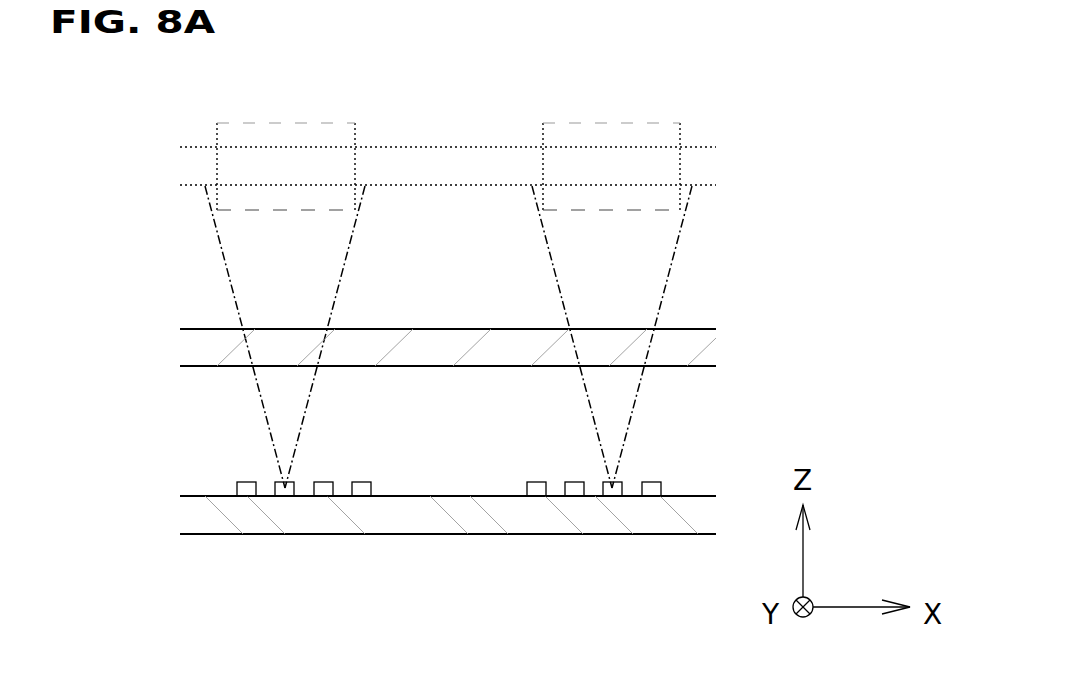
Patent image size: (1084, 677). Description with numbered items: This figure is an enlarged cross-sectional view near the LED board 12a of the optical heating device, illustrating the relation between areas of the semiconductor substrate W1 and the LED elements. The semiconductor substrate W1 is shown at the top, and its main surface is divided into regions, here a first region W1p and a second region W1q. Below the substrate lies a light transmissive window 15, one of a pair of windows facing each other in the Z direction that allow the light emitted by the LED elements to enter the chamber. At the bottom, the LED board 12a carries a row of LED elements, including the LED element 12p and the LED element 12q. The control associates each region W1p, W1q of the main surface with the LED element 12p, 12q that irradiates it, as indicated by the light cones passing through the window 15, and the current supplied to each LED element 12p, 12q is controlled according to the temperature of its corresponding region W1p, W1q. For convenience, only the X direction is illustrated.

The semiconductor substrate W1 is at (700, 165).
The region of the main surface of the semiconductor substrate W1p is at (217, 124).
The region of the main surface of the semiconductor substrate W1q is at (680, 123).
The light transmissive window 15 is at (202, 351).
The LED board 12a is at (202, 516).
The LED element 12p is at (285, 496).
The LED element 12q is at (612, 496).